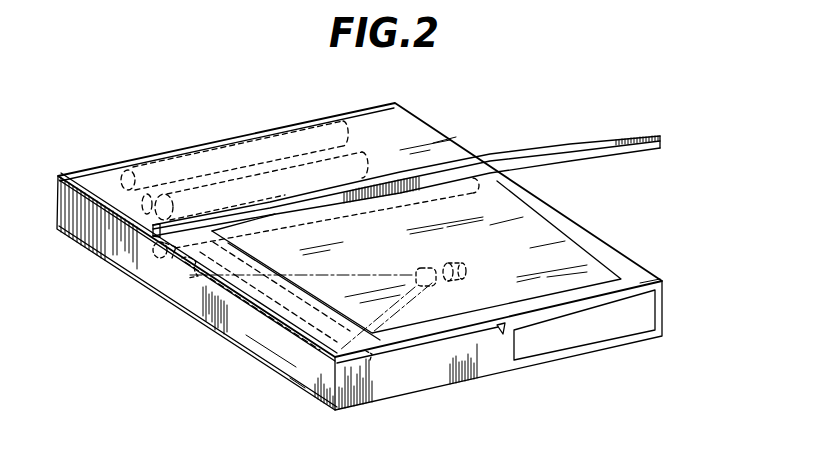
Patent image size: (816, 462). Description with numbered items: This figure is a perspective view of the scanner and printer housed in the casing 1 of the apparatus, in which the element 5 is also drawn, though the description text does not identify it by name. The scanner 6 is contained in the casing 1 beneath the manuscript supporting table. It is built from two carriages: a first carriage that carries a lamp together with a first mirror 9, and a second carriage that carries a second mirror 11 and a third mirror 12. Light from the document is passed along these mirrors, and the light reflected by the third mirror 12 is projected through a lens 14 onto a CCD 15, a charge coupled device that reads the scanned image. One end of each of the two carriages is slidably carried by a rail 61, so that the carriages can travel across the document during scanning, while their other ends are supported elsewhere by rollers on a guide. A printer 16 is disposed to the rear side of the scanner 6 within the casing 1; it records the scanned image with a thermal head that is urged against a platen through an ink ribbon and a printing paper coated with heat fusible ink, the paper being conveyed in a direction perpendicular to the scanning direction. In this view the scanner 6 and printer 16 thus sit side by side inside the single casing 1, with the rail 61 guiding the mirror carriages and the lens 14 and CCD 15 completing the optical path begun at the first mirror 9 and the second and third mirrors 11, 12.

The casing 1 is at (602, 238).
The cover arm 5 is at (593, 150).
The scanner 6 is at (369, 265).
The first mirror 9 is at (372, 355).
The second mirror 11 is at (280, 322).
The third mirror 12 is at (300, 388).
The lens 14 is at (431, 284).
The CCD 15 is at (468, 278).
The printer 16 is at (350, 123).
The rail 61 is at (152, 250).